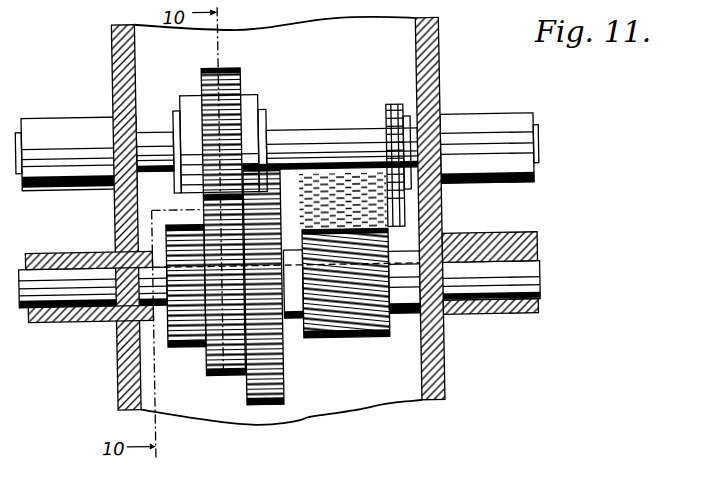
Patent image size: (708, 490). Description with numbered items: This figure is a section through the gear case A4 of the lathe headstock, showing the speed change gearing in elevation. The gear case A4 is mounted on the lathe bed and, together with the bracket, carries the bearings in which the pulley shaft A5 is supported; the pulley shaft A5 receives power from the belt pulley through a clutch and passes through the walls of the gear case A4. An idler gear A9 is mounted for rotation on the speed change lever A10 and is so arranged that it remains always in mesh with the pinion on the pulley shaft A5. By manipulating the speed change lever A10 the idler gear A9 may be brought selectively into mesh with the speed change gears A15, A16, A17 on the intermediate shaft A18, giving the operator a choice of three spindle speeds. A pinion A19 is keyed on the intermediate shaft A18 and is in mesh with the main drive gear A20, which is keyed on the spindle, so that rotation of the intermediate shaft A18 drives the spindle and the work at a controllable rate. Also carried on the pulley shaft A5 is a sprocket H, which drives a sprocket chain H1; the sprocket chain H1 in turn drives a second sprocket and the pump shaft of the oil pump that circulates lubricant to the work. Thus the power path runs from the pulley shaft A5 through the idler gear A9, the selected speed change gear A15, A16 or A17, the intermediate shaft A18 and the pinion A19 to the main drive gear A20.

The gear case A4 is at (121, 56).
The pulley shaft A5 is at (324, 140).
The idler gear A9 is at (215, 66).
The speed change lever A10 is at (252, 105).
The gear A15 is at (262, 346).
The speed change gear A16 is at (228, 333).
The speed change gear A17 is at (188, 317).
The intermediate shaft A18 is at (78, 268).
The pinion A19 is at (357, 283).
The main drive gear A20 is at (352, 190).
The sprocket H is at (443, 131).
The sprocket chain H1 is at (400, 198).